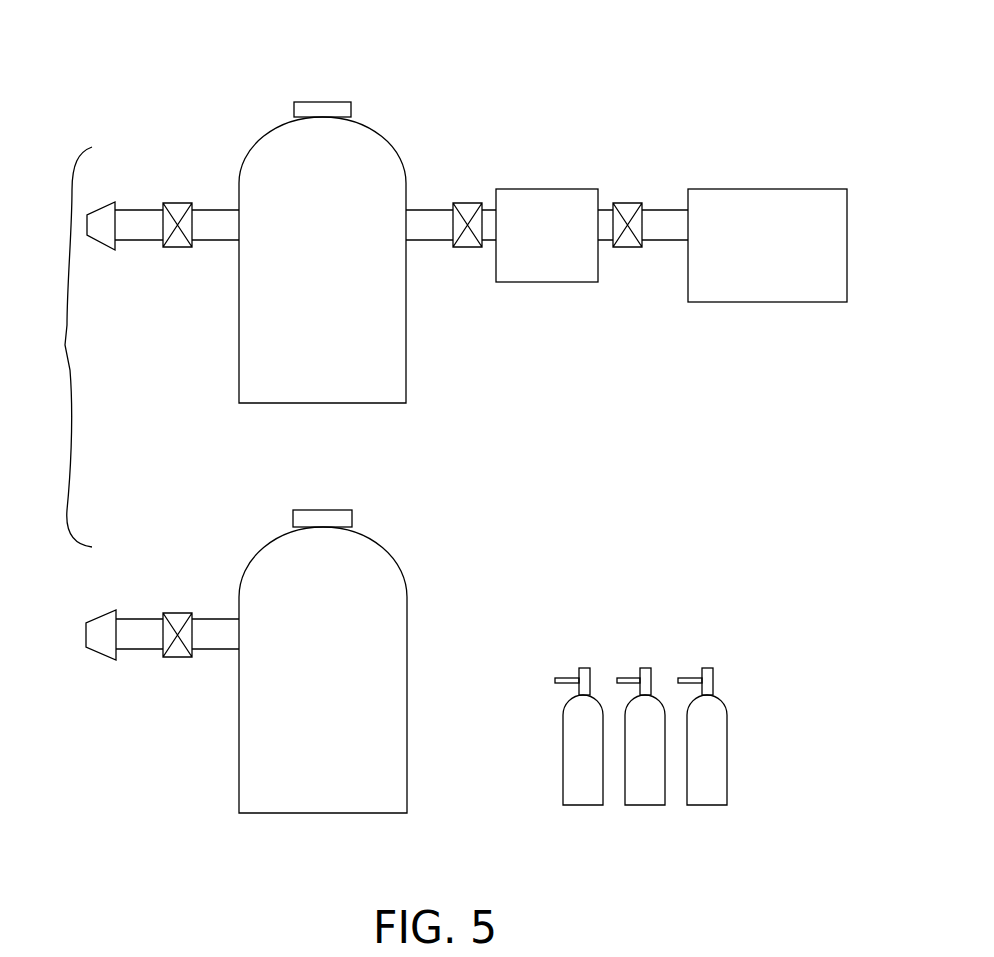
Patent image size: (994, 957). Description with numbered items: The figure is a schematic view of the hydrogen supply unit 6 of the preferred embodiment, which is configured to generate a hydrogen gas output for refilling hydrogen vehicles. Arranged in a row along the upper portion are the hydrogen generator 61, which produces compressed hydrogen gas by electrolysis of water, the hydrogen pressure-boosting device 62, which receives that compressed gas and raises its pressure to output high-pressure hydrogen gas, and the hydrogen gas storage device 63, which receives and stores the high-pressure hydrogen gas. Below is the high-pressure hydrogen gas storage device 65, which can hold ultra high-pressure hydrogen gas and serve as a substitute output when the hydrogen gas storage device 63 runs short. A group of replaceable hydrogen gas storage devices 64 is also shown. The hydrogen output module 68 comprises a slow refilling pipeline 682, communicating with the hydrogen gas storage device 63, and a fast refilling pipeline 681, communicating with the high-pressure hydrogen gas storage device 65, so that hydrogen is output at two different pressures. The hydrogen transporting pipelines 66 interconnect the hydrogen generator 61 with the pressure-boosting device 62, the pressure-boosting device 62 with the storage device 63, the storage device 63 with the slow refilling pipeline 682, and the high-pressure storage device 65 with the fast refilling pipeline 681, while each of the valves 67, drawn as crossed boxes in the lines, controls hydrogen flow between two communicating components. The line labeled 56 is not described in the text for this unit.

The hydrogen supply unit 6 is at (633, 100).
The hydrogen generator 61 is at (762, 213).
The hydrogen pressure-boosting device 62 is at (549, 210).
The hydrogen gas storage device 63 is at (360, 318).
The replaceable hydrogen gas storage devices 64 is at (584, 798).
The high-pressure hydrogen gas storage device 65 is at (380, 641).
The hydrogen transporting pipelines 66 is at (430, 225).
The valves 67 is at (180, 243).
The hydrogen output module 68 is at (63, 347).
The fast refilling pipeline 681 is at (130, 628).
The slow refilling pipeline 682 is at (130, 218).
The pipe 56 is at (218, 628).